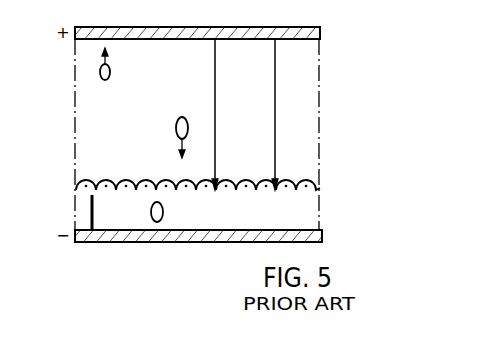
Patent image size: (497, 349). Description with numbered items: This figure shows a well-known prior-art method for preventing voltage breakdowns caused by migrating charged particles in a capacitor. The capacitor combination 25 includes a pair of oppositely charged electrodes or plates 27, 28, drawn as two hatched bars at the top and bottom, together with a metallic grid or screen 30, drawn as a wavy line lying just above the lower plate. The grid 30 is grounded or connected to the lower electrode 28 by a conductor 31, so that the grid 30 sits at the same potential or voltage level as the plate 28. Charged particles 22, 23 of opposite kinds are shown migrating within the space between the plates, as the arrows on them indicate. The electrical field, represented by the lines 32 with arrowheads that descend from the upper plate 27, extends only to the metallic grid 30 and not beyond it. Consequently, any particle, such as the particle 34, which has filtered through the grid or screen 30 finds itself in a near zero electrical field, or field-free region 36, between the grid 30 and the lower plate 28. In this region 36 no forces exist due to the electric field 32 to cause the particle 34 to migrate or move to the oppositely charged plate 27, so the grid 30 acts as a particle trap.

The capacitor combination 25 is at (152, 8).
The electrode or plate 27 is at (319, 28).
The electrode or plate 28 is at (318, 243).
The charged particle 22 is at (110, 74).
The charged particle 23 is at (176, 127).
The electrical field lines 32 is at (215, 148).
The metallic grid or screen 30 is at (320, 186).
The field-free region 36 is at (316, 214).
The conductor 31 is at (92, 213).
The particle 34 is at (152, 221).